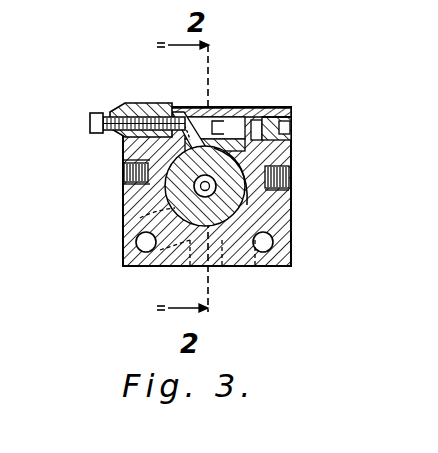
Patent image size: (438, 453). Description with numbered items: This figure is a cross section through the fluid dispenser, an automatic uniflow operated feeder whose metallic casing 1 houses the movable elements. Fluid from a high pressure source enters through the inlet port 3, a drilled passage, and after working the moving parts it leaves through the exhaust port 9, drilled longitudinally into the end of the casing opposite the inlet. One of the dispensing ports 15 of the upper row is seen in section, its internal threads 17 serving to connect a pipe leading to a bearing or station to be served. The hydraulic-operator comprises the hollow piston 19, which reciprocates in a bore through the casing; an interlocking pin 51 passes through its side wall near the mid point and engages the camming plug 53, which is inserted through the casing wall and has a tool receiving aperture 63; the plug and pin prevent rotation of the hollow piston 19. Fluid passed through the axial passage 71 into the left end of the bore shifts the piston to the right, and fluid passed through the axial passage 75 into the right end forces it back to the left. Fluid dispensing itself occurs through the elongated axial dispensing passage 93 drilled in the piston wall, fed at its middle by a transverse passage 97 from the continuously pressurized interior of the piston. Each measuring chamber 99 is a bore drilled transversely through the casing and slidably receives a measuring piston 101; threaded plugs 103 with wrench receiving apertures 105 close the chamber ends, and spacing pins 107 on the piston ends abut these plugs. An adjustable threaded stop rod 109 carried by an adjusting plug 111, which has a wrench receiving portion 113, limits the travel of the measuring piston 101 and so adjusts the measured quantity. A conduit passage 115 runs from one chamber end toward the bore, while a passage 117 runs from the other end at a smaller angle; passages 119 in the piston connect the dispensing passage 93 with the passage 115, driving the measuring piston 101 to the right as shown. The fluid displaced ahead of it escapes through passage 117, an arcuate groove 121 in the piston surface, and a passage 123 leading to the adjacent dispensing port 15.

The casing 1 is at (282, 140).
The inlet port 3 is at (148, 252).
The exhaust port 9 is at (291, 235).
The fluid dispensing ports 15 is at (124, 178).
The internal threads 17 is at (145, 185).
The hollow piston 19 is at (150, 252).
The interlocking pin 51 is at (222, 267).
The camming plug 53 is at (257, 267).
The tool receiving aperture 63 is at (192, 267).
The axial passage 71 is at (262, 152).
The axial passage 75 is at (132, 228).
The dispensing passage 93 is at (202, 124).
The transverse passage 97 is at (182, 118).
The measuring chamber 99 is at (193, 117).
The measuring piston 101 is at (231, 128).
The plugs 103 is at (291, 113).
The wrench receiving apertures 105 is at (290, 126).
The spacing pins 107 is at (270, 116).
The adjustable threaded stop rod 109 is at (150, 104).
The adjusting plug 111 is at (123, 132).
The wrench receiving portion 113 is at (118, 117).
The conduit passage 115 is at (135, 158).
The passage 117 is at (291, 145).
The passages 119 is at (124, 168).
The arcuate groove 121 is at (216, 128).
The passage 123 is at (289, 192).